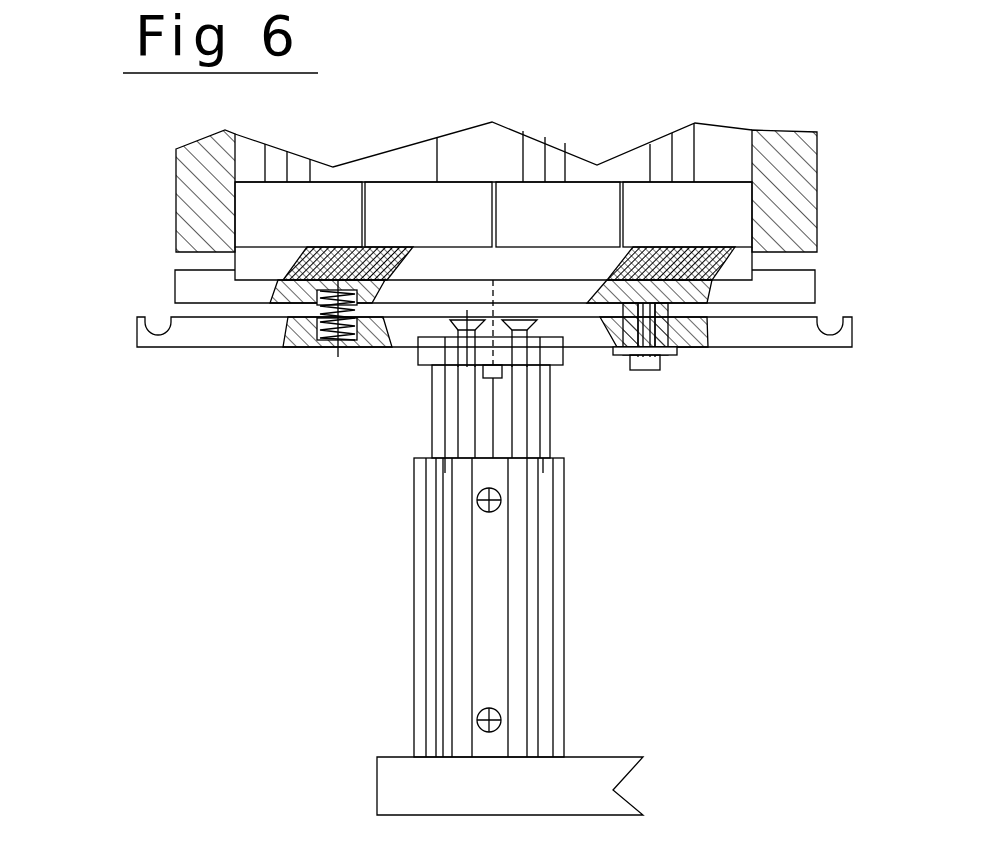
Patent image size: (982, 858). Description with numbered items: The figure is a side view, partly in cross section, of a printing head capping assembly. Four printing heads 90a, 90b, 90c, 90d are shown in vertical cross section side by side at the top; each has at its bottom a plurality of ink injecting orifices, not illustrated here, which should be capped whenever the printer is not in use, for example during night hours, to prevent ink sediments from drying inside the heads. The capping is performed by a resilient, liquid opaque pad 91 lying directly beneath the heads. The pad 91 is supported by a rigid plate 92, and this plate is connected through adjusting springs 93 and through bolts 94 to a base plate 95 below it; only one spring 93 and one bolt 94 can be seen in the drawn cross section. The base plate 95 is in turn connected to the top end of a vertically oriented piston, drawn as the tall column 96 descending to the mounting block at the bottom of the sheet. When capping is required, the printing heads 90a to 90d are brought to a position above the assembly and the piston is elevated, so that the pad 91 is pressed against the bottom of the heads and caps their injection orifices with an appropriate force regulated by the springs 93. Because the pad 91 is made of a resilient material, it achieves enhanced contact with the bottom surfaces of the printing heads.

The printing head 90a is at (315, 227).
The printing head 90b is at (457, 227).
The printing head 90c is at (597, 227).
The printing head 90d is at (717, 227).
The capping pad 91 is at (243, 255).
The rigid plate 92 is at (190, 287).
The adjusting spring 93 is at (334, 350).
The bolt 94 is at (662, 362).
The base plate 95 is at (202, 338).
The support column 96 is at (543, 443).